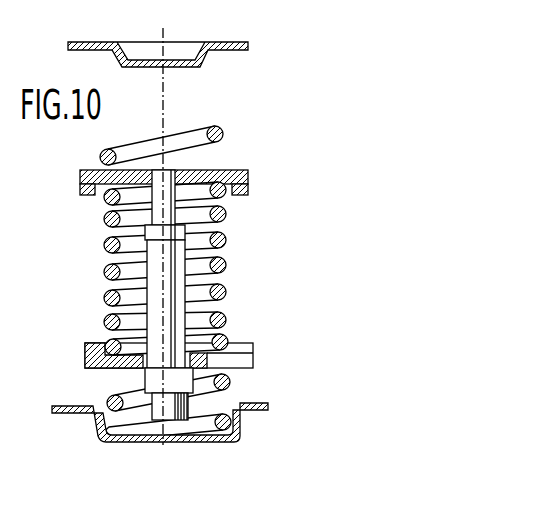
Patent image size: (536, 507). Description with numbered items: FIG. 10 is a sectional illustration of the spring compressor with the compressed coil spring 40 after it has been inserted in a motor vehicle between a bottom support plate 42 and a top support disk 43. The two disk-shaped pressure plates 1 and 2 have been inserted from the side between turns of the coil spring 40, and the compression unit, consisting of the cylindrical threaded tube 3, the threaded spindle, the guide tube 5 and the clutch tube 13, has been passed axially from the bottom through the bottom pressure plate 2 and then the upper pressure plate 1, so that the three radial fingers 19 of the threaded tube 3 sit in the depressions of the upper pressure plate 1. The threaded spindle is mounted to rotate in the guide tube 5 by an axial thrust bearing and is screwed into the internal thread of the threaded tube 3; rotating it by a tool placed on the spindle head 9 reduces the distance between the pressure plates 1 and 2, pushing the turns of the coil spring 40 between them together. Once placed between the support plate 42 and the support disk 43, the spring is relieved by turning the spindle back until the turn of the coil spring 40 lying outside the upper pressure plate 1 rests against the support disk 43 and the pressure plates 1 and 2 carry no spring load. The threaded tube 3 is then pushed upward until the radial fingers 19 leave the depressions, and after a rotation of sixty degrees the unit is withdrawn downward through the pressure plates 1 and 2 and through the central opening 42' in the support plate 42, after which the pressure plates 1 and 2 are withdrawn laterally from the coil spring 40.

The upper pressure plate 1 is at (246, 181).
The bottom pressure plate 2 is at (245, 354).
The threaded tube 3 is at (178, 170).
The guide tube 5 is at (157, 292).
The spindle head 9 is at (167, 412).
The clutch tube 13 is at (158, 233).
The radial fingers 19 is at (149, 172).
The coil spring 40 is at (225, 262).
The bottom support plate 42 is at (161, 436).
The central opening 42' is at (167, 448).
The top support disk 43 is at (220, 43).